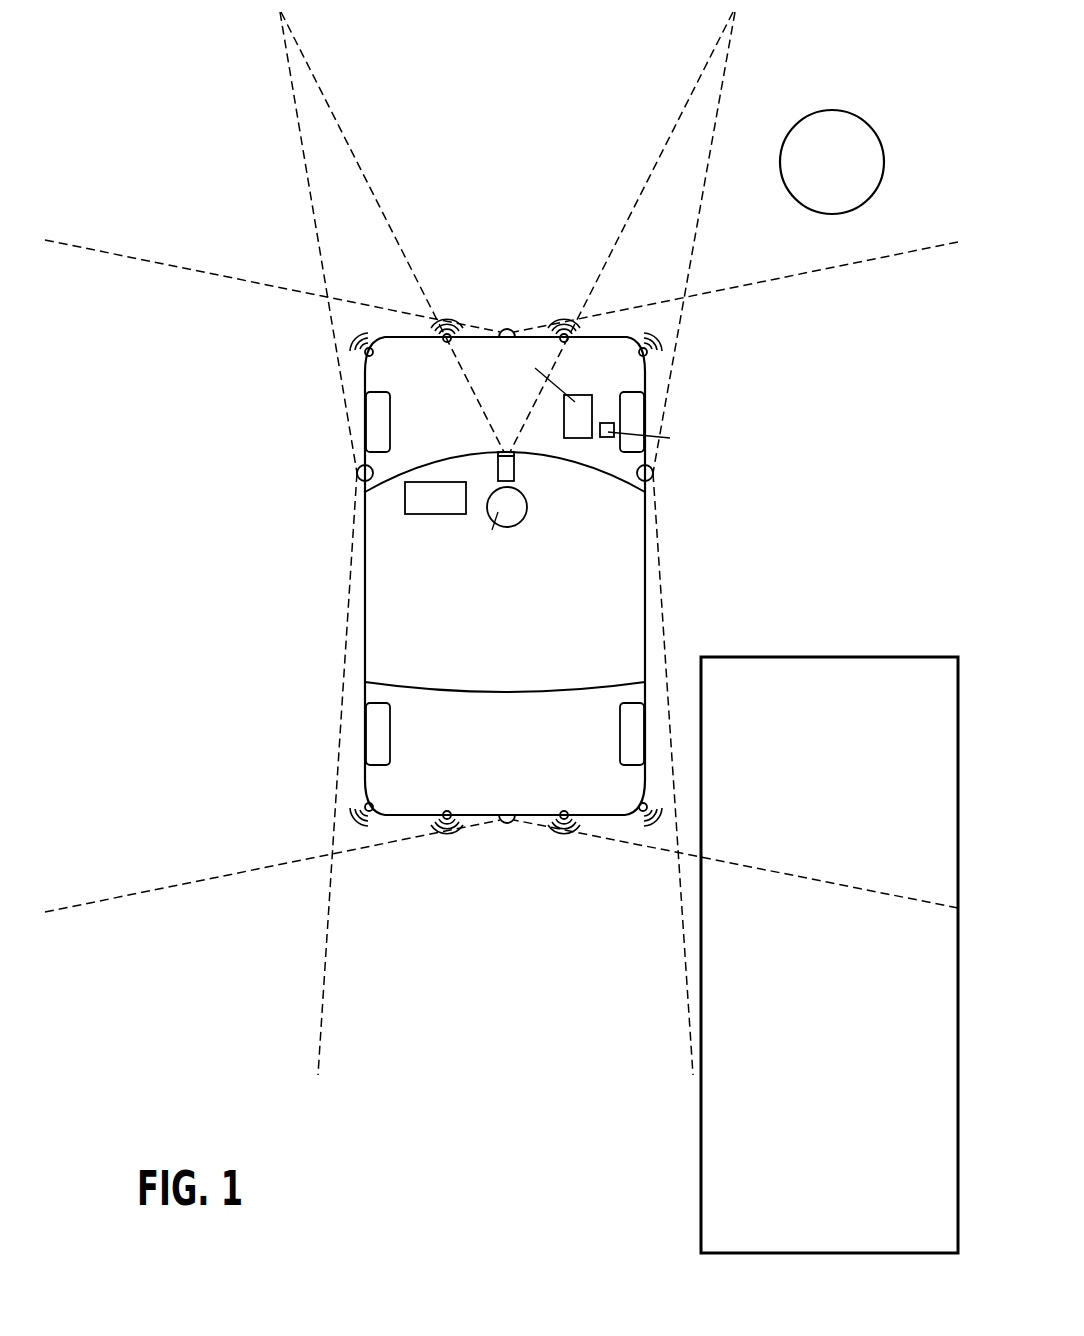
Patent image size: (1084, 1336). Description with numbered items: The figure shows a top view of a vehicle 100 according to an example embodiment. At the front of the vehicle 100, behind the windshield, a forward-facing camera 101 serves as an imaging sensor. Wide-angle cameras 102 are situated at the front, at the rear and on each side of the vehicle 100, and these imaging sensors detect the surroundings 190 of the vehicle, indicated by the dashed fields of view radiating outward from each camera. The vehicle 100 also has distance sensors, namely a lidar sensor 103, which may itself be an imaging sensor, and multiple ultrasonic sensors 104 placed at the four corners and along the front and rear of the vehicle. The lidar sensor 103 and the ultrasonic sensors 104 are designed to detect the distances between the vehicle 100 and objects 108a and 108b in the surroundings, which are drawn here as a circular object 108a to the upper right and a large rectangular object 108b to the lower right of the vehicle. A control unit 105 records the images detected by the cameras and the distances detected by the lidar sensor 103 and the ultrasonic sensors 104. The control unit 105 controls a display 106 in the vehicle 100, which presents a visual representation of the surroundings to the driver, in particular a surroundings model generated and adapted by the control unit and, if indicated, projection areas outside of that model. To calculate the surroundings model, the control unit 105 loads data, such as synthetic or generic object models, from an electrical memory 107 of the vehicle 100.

The vehicle 100 is at (690, 376).
The forward-facing camera 101 is at (514, 470).
The wide-angle cameras 102 is at (507, 329).
The lidar sensor 103 is at (513, 510).
The ultrasonic sensors 104 is at (445, 342).
The control unit 105 is at (578, 417).
The display 106 is at (437, 515).
The electrical memory 107 is at (607, 440).
The object 108a is at (859, 175).
The object 108b is at (863, 1015).
The surroundings 190 is at (184, 450).